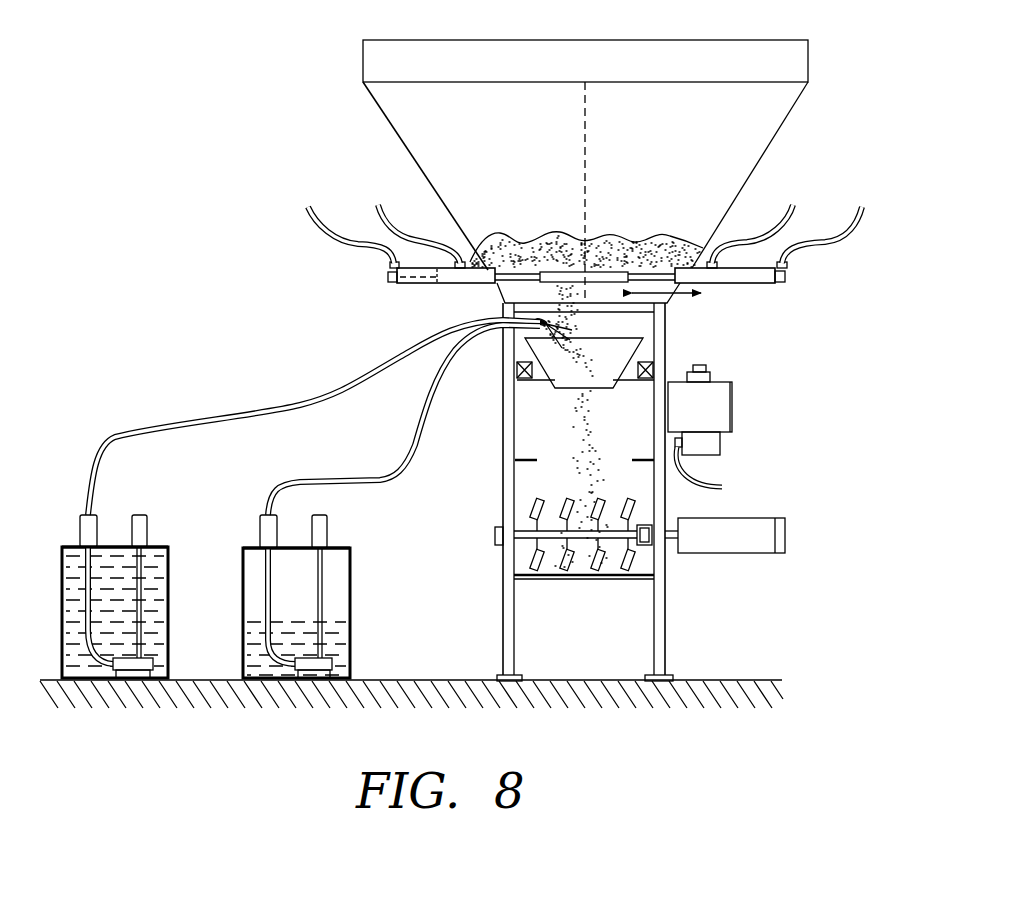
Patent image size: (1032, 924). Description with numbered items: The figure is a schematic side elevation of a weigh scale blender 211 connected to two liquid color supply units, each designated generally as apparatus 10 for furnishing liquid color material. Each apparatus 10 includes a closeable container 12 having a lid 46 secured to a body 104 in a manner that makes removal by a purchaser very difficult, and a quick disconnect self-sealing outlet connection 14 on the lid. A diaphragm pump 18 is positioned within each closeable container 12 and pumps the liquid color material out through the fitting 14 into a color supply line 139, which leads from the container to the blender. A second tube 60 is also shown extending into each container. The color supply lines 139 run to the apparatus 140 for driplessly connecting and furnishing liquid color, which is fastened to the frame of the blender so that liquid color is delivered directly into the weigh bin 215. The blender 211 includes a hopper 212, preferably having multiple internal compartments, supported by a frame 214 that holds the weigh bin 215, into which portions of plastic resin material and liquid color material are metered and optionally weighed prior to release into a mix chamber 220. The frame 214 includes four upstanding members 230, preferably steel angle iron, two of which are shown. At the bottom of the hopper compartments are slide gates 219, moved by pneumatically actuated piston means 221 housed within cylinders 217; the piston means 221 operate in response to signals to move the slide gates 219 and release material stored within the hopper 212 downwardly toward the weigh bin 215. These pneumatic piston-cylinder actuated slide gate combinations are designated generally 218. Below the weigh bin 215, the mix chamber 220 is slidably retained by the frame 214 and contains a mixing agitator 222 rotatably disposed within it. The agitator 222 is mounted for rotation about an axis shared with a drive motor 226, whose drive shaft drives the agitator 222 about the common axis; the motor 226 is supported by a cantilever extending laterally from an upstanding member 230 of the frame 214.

The apparatus for furnishing liquid color material 10 is at (248, 602).
The closeable container 12 is at (174, 622).
The quick disconnect self-sealing outlet connection 14 is at (80, 527).
The diaphragm pump 18 is at (130, 670).
The lid 46 is at (162, 545).
The return tube 60 is at (137, 520).
The body 104 is at (170, 640).
The color supply line 139 is at (302, 403).
The apparatus for driplessly connecting and furnishing liquid color 140 is at (497, 346).
The weigh scale blender 211 is at (510, 171).
The hopper 212 is at (378, 112).
The frame 214 is at (683, 326).
The weigh bin 215 is at (650, 351).
The cylinders 217 is at (405, 283).
The pneumatic piston-cylinder actuated slide gate combinations 218 is at (806, 226).
The slide gates 219 is at (612, 270).
The mix chamber 220 is at (578, 556).
The pneumatically actuated piston means 221 is at (433, 268).
The mixing agitator 222 is at (612, 540).
The drive motor 226 is at (763, 520).
The upstanding members 230 is at (503, 640).